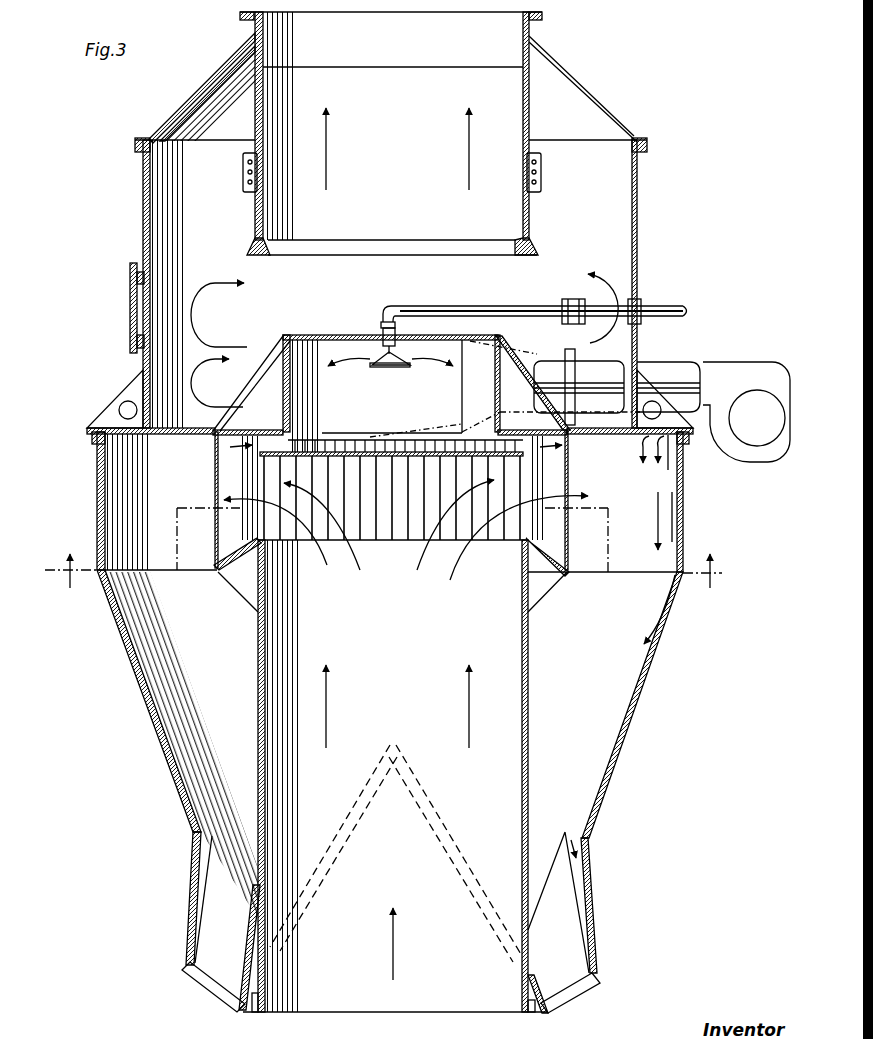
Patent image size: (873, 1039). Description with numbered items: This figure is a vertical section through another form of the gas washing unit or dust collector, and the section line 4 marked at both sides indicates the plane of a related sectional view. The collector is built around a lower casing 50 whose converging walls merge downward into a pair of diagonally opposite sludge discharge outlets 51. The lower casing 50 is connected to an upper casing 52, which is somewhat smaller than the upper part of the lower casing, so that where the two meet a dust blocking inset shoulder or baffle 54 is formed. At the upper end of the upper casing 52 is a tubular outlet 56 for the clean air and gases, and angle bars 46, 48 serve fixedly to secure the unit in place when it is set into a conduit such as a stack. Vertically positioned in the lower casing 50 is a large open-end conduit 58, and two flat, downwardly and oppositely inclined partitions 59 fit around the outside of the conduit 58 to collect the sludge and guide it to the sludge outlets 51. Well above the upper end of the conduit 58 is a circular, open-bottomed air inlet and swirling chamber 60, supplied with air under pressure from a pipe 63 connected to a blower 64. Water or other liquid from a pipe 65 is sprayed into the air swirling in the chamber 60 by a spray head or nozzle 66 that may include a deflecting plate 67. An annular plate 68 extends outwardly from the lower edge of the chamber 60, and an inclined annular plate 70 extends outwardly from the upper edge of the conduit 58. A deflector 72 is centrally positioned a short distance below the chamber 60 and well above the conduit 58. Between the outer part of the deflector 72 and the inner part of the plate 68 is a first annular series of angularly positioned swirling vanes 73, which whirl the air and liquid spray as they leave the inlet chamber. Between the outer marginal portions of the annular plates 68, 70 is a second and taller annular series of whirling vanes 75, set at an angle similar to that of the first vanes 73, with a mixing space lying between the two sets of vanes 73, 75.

The section line 4- 4 is at (385, 571).
The angle bar 46 is at (250, 17).
The angle bar 48 is at (250, 1015).
The lower casing 50 is at (148, 699).
The sludge discharge outlet 51 is at (200, 868).
The upper casing 52 is at (638, 190).
The inset shoulder or baffle 54 is at (140, 436).
The tubular outlet 56 is at (522, 138).
The open-end conduit 58 is at (528, 702).
The inclined partition 59 is at (436, 829).
The air inlet and swirling chamber 60 is at (362, 335).
The pipe 63 is at (558, 365).
The blower 64 is at (724, 447).
The pipe 65 is at (432, 308).
The spray head or nozzle 66 is at (399, 347).
The deflecting plate 67 is at (392, 360).
The annular plate 68 is at (225, 432).
The inclined annular plate 70 is at (237, 552).
The deflector 72 is at (328, 451).
The swirling vanes 73 is at (268, 442).
The whirling vanes 75 is at (232, 449).